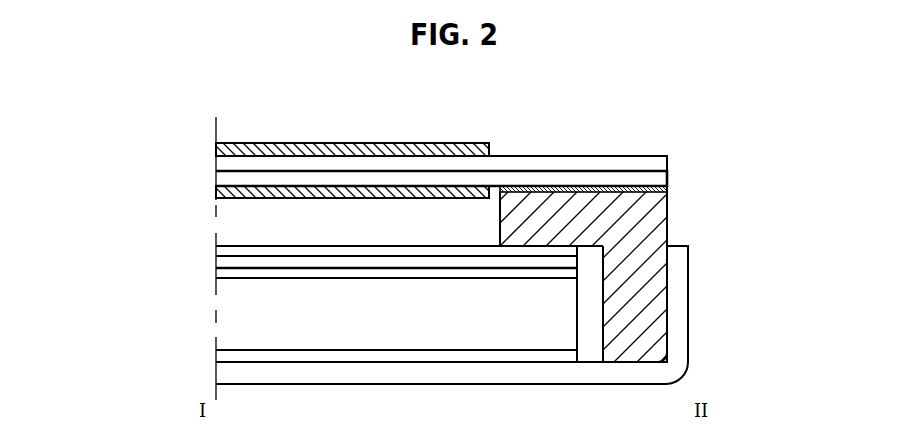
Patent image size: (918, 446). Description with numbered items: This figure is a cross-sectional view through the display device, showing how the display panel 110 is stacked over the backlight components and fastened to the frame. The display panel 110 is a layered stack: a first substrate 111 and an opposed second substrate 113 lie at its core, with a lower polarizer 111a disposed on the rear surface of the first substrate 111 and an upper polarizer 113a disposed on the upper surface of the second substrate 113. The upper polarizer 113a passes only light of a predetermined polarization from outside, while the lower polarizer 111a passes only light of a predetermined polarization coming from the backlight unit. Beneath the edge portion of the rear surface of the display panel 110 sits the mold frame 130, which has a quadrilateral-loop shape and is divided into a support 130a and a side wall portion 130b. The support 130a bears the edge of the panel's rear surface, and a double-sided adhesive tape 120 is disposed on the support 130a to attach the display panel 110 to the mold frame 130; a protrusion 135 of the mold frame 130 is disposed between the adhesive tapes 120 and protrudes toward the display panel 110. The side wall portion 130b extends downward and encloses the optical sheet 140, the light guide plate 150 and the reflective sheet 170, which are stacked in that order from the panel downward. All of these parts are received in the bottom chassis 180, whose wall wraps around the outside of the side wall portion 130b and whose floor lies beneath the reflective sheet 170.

The display panel 110 is at (130, 138).
The upper polarizer 113a is at (222, 150).
The second substrate 113 is at (223, 165).
The first substrate 111 is at (225, 180).
The lower polarizer 111a is at (217, 192).
The adhesive tape 120 is at (573, 190).
The protrusion 135 is at (647, 188).
The mold frame 130 is at (772, 222).
The support 130a is at (572, 220).
The side wall portion 130b is at (658, 274).
The optical sheet 140 is at (208, 245).
The light guide plate 150 is at (233, 323).
The reflective sheet 170 is at (228, 355).
The bottom chassis 180 is at (678, 325).